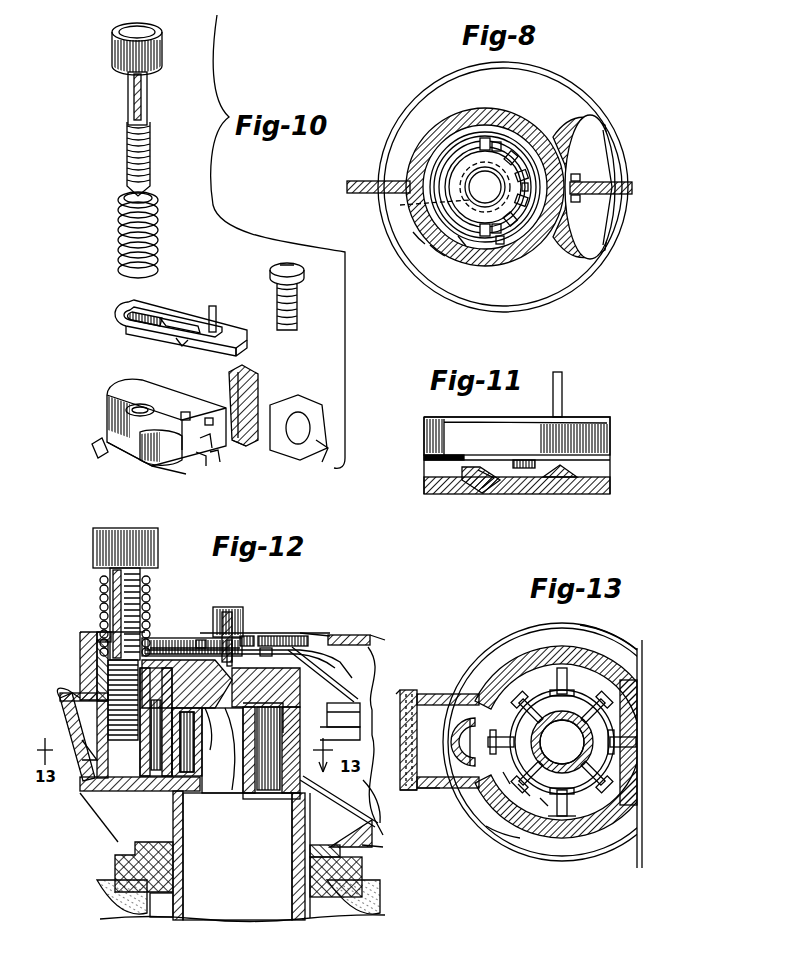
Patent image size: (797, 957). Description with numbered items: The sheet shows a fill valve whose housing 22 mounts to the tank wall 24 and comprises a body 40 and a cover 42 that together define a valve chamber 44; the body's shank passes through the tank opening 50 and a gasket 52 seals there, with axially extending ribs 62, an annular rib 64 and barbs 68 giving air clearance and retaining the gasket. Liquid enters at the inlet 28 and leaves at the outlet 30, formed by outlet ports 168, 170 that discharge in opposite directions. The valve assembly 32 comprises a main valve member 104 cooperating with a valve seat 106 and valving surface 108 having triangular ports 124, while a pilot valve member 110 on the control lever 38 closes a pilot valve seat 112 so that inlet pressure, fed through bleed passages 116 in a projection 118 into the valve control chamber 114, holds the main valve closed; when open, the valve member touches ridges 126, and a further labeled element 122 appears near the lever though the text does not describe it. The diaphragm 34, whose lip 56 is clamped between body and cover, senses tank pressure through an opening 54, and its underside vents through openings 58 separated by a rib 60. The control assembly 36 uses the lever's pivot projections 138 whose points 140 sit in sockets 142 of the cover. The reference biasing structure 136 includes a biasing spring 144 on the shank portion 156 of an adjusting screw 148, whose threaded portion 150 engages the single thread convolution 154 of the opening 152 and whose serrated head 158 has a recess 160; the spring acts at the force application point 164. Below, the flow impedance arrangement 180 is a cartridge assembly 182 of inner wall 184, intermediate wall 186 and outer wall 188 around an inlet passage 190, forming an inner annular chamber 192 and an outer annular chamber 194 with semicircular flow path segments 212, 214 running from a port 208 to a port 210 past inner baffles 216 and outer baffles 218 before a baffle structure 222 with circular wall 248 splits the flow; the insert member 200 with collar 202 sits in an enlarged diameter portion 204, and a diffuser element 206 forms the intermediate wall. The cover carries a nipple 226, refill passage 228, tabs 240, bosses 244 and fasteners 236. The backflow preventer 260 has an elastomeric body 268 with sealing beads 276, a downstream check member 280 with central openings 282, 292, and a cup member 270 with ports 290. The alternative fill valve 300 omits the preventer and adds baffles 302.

In FIG. 8, the housing 22 is at (590, 92).
In FIG. 12, the housing 22 is at (368, 636).
In FIG. 13, the housing 22 is at (634, 862).
In FIG. 12, the tank wall 24 is at (98, 886).
In FIG. 12, the inlet 28 is at (248, 865).
In FIG. 12, the outlet 30 is at (62, 706).
In FIG. 13, the outlet 30 is at (402, 704).
In FIG. 12, the valve assembly 32 is at (250, 594).
In FIG. 12, the diaphragm 34 is at (350, 718).
In FIG. 12, the control assembly 36 is at (174, 594).
In FIG. 10, the control lever 38 is at (237, 343).
In FIG. 11, the control lever 38 is at (432, 437).
In FIG. 12, the control lever 38 is at (368, 645).
In FIG. 8, the body 40 is at (616, 230).
In FIG. 12, the body 40 is at (360, 850).
In FIG. 13, the body 40 is at (495, 822).
In FIG. 10, the cover 42 is at (325, 448).
In FIG. 11, the cover 42 is at (598, 494).
In FIG. 12, the cover 42 is at (338, 636).
In FIG. 10, the valve chamber 44 is at (186, 470).
In FIG. 12, the valve chamber 44 is at (292, 652).
In FIG. 12, the tank opening 50 is at (362, 902).
In FIG. 12, the gasket 52 is at (116, 866).
In FIG. 12, the opening 54 is at (334, 636).
In FIG. 12, the lip 56 is at (330, 690).
In FIG. 8, the openings 58 is at (580, 178).
In FIG. 12, the openings 58 is at (310, 848).
In FIG. 8, the rib 60 is at (602, 187).
In FIG. 12, the rib 60 is at (372, 833).
In FIG. 12, the axially extending ribs 62 is at (183, 873).
In FIG. 12, the annular rib 64 is at (175, 898).
In FIG. 12, the barbs 68 is at (150, 917).
In FIG. 12, the main valve member 104 is at (172, 638).
In FIG. 12, the valve seat 106 is at (200, 760).
In FIG. 12, the valving surface 108 is at (292, 668).
In FIG. 10, the pilot valve member 110 is at (216, 310).
In FIG. 11, the pilot valve member 110 is at (520, 484).
In FIG. 12, the pilot valve member 110 is at (244, 632).
In FIG. 10, the pilot valve seat 112 is at (210, 414).
In FIG. 11, the pilot valve seat 112 is at (562, 484).
In FIG. 12, the pilot valve seat 112 is at (222, 622).
In FIG. 12, the valve control chamber 114 is at (268, 650).
In FIG. 10, the bleed passages 116 is at (202, 458).
In FIG. 12, the bleed passages 116 is at (218, 770).
In FIG. 10, the projection 118 is at (216, 460).
In FIG. 12, the projection 118 is at (240, 770).
In FIG. 10, the tab 122 is at (208, 444).
In FIG. 12, the tab 122 is at (200, 638).
In FIG. 12, the triangular ports 124 is at (335, 718).
In FIG. 12, the ridges 126 is at (278, 632).
In FIG. 10, the reference biasing structure 136 is at (87, 161).
In FIG. 12, the reference biasing structure 136 is at (80, 560).
In FIG. 10, the pivot projections 138 is at (195, 318).
In FIG. 11, the pivot projections 138 is at (482, 466).
In FIG. 12, the pivot projections 138 is at (182, 636).
In FIG. 10, the points 140 is at (180, 346).
In FIG. 11, the points 140 is at (482, 488).
In FIG. 10, the sockets 142 is at (186, 410).
In FIG. 11, the sockets 142 is at (466, 486).
In FIG. 10, the biasing spring 144 is at (119, 246).
In FIG. 12, the biasing spring 144 is at (148, 578).
In FIG. 10, the adjusting screw 148 is at (128, 92).
In FIG. 12, the adjusting screw 148 is at (134, 516).
In FIG. 10, the threaded portion 150 is at (151, 153).
In FIG. 12, the threaded portion 150 is at (98, 648).
In FIG. 10, the opening 152 is at (124, 452).
In FIG. 12, the opening 152 is at (96, 666).
In FIG. 10, the thread convolution 154 is at (130, 384).
In FIG. 12, the thread convolution 154 is at (158, 634).
In FIG. 10, the shank portion 156 is at (147, 96).
In FIG. 12, the shank portion 156 is at (112, 580).
In FIG. 10, the head 158 is at (165, 42).
In FIG. 12, the head 158 is at (94, 538).
In FIG. 10, the recess 160 is at (120, 31).
In FIG. 10, the force application point 164 is at (128, 306).
In FIG. 12, the force application point 164 is at (97, 636).
In FIG. 13, the outlet port 168 is at (425, 690).
In FIG. 12, the outlet port 170 is at (62, 720).
In FIG. 13, the outlet port 170 is at (418, 790).
In FIG. 13, the flow impedance arrangement 180 is at (648, 616).
In FIG. 13, the cartridge assembly 182 is at (545, 650).
In FIG. 12, the inner wall 184 is at (258, 795).
In FIG. 13, the inner wall 184 is at (562, 742).
In FIG. 12, the intermediate wall 186 is at (228, 792).
In FIG. 13, the intermediate wall 186 is at (490, 727).
In FIG. 13, the outer wall 188 is at (528, 810).
In FIG. 12, the inlet passage 190 is at (210, 786).
In FIG. 13, the inlet passage 190 is at (562, 742).
In FIG. 12, the inner annular chamber 192 is at (286, 795).
In FIG. 13, the inner annular chamber 192 is at (550, 818).
In FIG. 12, the outer annular chamber 194 is at (142, 788).
In FIG. 13, the outer annular chamber 194 is at (512, 800).
In FIG. 8, the insert member 200 is at (422, 152).
In FIG. 8, the collar 202 is at (440, 252).
In FIG. 8, the enlarged diameter portion 204 is at (425, 242).
In FIG. 12, the diffuser element 206 is at (150, 784).
In FIG. 13, the diffuser element 206 is at (492, 742).
In FIG. 12, the port 208 is at (310, 780).
In FIG. 13, the port 208 is at (593, 742).
In FIG. 12, the port 210 is at (140, 760).
In FIG. 13, the port 210 is at (486, 696).
In FIG. 13, the flow path segment 212 is at (566, 668).
In FIG. 13, the flow path segment 214 is at (568, 824).
In FIG. 13, the inner baffles 216 is at (527, 686).
In FIG. 13, the outer baffles 218 is at (600, 668).
In FIG. 12, the baffle structure 222 is at (96, 778).
In FIG. 13, the baffle structure 222 is at (410, 742).
In FIG. 10, the nipple 226 is at (252, 378).
In FIG. 12, the nipple 226 is at (228, 606).
In FIG. 10, the refill passage 228 is at (240, 444).
In FIG. 10, the fasteners 236 is at (300, 270).
In FIG. 10, the tabs 240 is at (98, 444).
In FIG. 10, the bosses 244 is at (305, 402).
In FIG. 12, the circular wall 248 is at (100, 770).
In FIG. 13, the circular wall 248 is at (440, 790).
In FIG. 8, the backflow preventer 260 is at (436, 108).
In FIG. 8, the elastomeric body 268 is at (500, 246).
In FIG. 8, the cup member 270 is at (518, 235).
In FIG. 8, the sealing beads 276 is at (548, 268).
In FIG. 8, the downstream check member 280 is at (465, 245).
In FIG. 8, the central opening 282 is at (400, 206).
In FIG. 8, the ports 290 is at (500, 136).
In FIG. 8, the central opening 292 is at (535, 138).
In FIG. 12, the fill valve 300 is at (322, 582).
In FIG. 13, the fill valve 300 is at (488, 595).
In FIG. 12, the baffles 302 is at (136, 786).
In FIG. 13, the baffles 302 is at (503, 668).